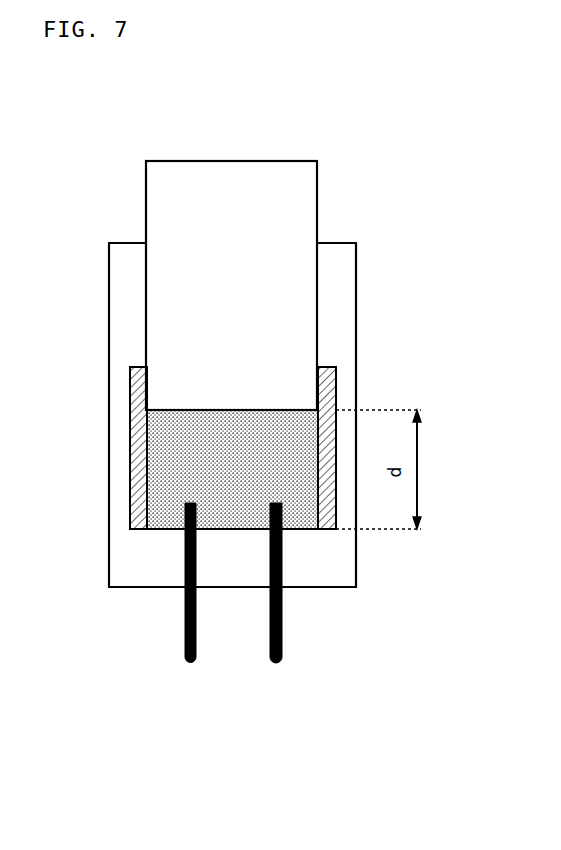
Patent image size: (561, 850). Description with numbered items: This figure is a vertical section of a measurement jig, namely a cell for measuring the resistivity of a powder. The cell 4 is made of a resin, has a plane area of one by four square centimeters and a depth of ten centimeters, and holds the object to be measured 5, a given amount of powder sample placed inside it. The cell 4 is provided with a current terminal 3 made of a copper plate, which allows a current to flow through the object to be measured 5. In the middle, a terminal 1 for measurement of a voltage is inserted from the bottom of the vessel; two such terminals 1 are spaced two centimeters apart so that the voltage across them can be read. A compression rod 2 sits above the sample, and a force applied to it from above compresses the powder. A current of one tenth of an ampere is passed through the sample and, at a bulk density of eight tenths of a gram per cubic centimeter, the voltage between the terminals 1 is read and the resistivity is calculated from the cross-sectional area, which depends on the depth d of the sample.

The terminal 1 is at (182, 607).
The compression rod 2 is at (269, 178).
The current terminal 3 is at (330, 379).
The cell 4 is at (338, 287).
The object to be measured 5 is at (167, 442).